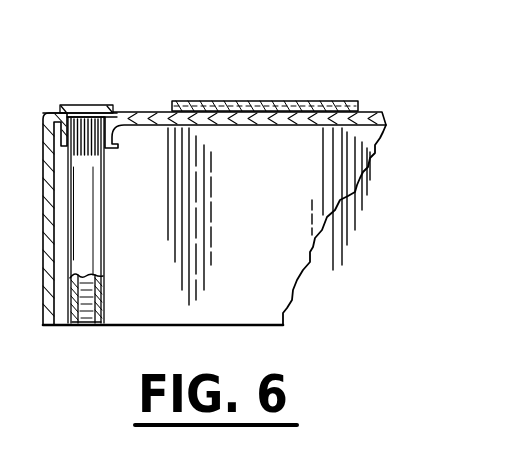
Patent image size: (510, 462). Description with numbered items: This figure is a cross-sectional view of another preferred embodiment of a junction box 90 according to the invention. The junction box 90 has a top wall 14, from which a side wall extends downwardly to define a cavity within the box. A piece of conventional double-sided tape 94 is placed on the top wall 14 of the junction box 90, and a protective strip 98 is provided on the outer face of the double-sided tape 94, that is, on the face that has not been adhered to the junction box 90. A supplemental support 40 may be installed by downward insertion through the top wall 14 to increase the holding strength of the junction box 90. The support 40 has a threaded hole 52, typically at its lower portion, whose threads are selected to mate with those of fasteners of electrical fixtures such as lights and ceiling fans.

The top wall 14 is at (128, 102).
The supplemental support 40 is at (107, 300).
The threaded hole 52 is at (84, 325).
The junction box 90 is at (330, 264).
The double-sided tape 94 is at (160, 98).
The protective strip 98 is at (255, 100).